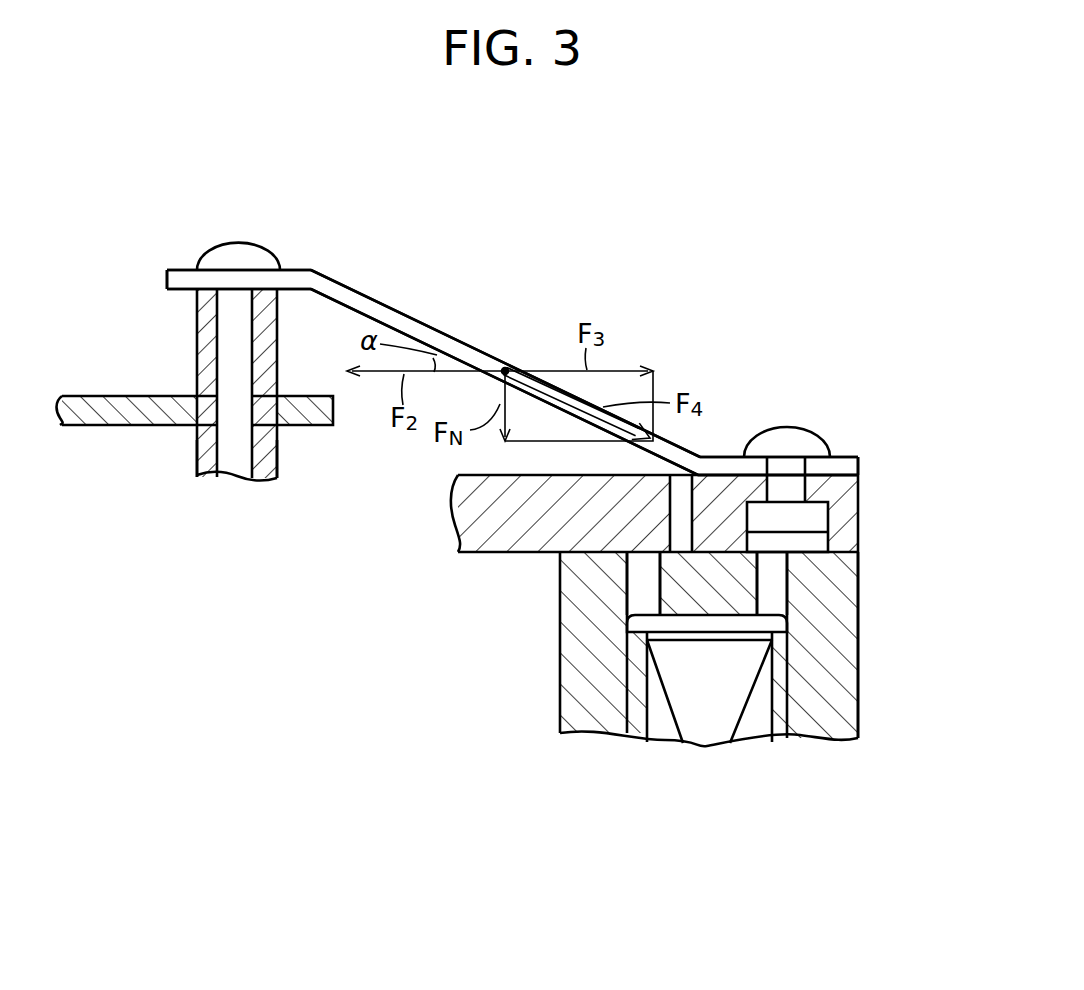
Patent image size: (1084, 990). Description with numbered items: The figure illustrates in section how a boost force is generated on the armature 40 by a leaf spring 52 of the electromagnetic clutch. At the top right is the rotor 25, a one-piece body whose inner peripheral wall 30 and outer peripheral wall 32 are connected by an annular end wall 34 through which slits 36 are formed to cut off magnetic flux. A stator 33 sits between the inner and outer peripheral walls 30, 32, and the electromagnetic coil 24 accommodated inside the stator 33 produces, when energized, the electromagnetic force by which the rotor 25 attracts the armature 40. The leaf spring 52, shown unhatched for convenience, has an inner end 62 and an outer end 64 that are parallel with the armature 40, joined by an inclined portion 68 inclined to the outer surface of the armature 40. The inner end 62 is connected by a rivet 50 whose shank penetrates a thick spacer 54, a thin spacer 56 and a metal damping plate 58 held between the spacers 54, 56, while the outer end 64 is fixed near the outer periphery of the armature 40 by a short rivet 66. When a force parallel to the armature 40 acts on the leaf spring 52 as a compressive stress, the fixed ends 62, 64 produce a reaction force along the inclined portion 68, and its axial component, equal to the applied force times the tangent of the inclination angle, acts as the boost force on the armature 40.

The electromagnetic coil 24 is at (750, 717).
The rotor 25 is at (872, 677).
The inner peripheral wall 30 is at (568, 683).
The outer peripheral wall 32 is at (823, 717).
The stator 33 is at (637, 710).
The annular end wall 34 is at (703, 597).
The slits 36 is at (775, 598).
The armature 40 is at (504, 540).
The rivet 50 is at (238, 255).
The leaf spring 52 is at (293, 268).
The thick spacer 54 is at (205, 335).
The thin spacer 56 is at (207, 458).
The damping plate 58 is at (110, 420).
The inner end 62 is at (183, 276).
The outer end 64 is at (840, 466).
The short rivet 66 is at (793, 437).
The inclined portion 68 is at (418, 325).